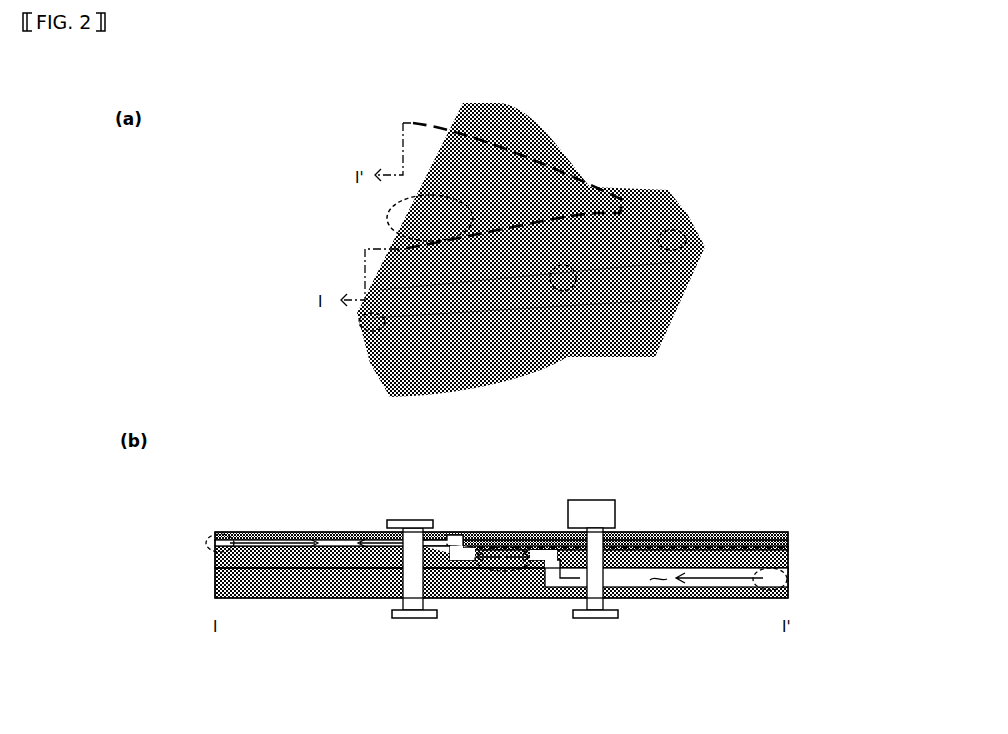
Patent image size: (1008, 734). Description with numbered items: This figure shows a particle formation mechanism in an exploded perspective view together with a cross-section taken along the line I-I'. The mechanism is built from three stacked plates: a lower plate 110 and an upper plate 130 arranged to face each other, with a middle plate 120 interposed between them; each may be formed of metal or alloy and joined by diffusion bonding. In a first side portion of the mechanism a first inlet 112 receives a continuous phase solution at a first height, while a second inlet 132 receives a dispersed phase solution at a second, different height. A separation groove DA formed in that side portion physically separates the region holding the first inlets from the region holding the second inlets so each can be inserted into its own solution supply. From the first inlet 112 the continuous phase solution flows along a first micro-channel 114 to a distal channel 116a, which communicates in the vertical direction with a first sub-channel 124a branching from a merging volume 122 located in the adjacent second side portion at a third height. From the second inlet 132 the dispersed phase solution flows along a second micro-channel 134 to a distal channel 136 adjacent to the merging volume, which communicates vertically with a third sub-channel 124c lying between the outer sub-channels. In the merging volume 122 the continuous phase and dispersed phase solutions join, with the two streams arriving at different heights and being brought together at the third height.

The lower plate 110 is at (650, 340).
The first inlet 112 is at (787, 578).
The first micro-channel 114 is at (655, 583).
The distal channel 116a is at (560, 587).
The middle plate 120 is at (675, 220).
The merging volume 122 is at (686, 238).
The first sub-channel 124a is at (574, 562).
The third sub-channel 124c is at (448, 580).
The upper plate 130 is at (650, 196).
The second inlet 132 is at (360, 326).
The second micro-channel 134 is at (440, 318).
The distal channel 136 is at (563, 291).
The separation groove DA is at (388, 222).